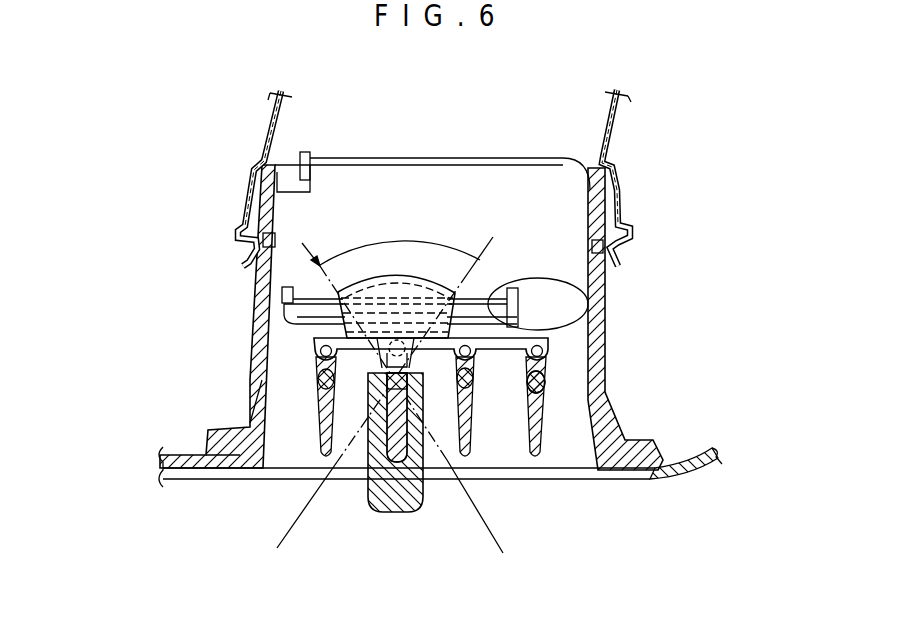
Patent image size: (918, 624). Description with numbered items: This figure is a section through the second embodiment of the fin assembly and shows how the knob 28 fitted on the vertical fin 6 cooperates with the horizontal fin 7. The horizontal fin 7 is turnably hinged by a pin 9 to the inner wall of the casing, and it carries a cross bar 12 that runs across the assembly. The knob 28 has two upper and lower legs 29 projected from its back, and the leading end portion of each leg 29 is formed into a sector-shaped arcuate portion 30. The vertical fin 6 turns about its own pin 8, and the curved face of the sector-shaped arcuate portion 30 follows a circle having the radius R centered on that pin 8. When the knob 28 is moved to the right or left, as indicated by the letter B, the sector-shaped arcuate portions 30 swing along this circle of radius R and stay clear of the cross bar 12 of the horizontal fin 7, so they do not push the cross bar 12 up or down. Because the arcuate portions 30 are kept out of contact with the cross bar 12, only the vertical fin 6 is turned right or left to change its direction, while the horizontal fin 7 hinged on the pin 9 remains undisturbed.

The sector-shaped arcuate portion 30 is at (420, 270).
The direction of knob movement B is at (393, 250).
The radius R is at (390, 387).
The pin 9 is at (612, 249).
The horizontal fin 7 is at (560, 279).
The cross bar 12 is at (603, 312).
The pin 8 is at (546, 384).
The vertical fin 6 is at (546, 426).
The leg 29 is at (416, 374).
The knob 28 is at (404, 516).